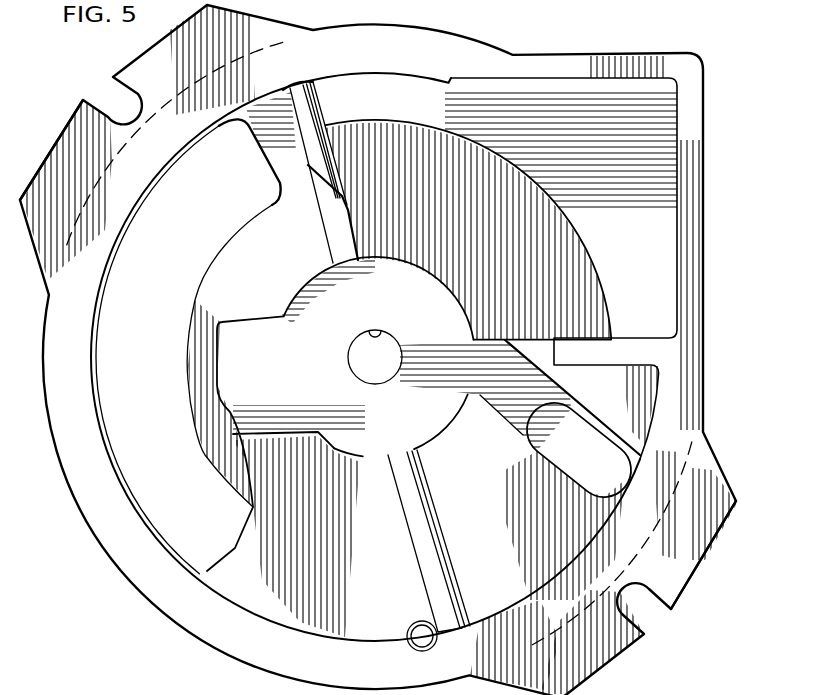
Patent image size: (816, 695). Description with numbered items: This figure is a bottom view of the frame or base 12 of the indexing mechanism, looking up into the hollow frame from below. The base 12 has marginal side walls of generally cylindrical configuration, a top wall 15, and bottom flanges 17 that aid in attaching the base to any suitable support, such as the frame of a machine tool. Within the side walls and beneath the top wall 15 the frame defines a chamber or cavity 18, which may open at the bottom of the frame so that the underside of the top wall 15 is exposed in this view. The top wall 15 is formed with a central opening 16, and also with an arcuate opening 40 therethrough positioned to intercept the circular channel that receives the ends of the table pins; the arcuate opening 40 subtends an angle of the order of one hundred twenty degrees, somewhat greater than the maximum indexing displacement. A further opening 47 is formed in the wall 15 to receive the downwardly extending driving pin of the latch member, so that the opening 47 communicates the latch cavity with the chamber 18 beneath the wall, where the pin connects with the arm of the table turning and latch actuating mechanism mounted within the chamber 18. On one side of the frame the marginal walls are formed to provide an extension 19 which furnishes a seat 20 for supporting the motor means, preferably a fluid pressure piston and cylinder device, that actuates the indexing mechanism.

The frame or base 12 is at (98, 512).
The top wall 15 is at (455, 225).
The central opening 16 is at (380, 336).
The bottom flanges 17 is at (50, 153).
The chamber or cavity 18 is at (278, 605).
The extension 19 is at (697, 88).
The seat 20 is at (541, 52).
The arcuate opening 40 is at (218, 243).
The opening 47 is at (597, 432).